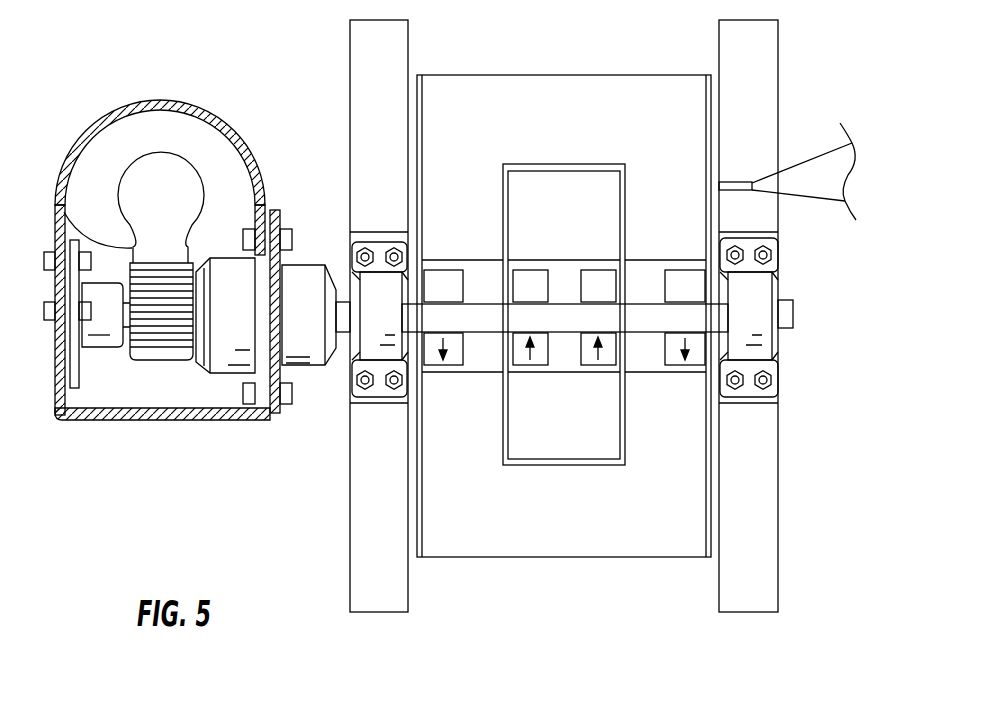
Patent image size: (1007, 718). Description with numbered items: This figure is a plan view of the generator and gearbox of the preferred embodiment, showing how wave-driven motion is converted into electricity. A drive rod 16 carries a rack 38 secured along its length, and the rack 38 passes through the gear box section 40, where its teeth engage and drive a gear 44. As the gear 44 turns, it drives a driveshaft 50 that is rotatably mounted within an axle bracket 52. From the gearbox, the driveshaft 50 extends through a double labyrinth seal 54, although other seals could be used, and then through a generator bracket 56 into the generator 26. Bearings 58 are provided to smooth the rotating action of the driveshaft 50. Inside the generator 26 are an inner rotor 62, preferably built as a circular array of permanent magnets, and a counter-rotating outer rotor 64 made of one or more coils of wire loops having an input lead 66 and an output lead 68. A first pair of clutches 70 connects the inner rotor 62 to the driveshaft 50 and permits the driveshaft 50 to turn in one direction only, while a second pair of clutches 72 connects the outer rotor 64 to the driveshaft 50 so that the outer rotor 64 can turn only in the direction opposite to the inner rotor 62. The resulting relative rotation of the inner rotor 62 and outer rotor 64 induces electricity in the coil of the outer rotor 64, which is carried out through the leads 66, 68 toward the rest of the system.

The drive rod 16 is at (172, 163).
The generator 26 is at (779, 557).
The rack 38 is at (64, 205).
The gear box section 40 is at (172, 420).
The gear 44 is at (135, 362).
The driveshaft 50 is at (345, 295).
The axle bracket 52 is at (56, 398).
The double labyrinth seal 54 is at (287, 362).
The generator bracket 56 is at (370, 613).
The bearings 58 is at (340, 318).
The inner rotor 62 is at (530, 466).
The outer rotor 64 is at (452, 558).
The input lead 66 is at (826, 153).
The output lead 68 is at (817, 202).
The first pair of clutches 70 is at (532, 366).
The second pair of clutches 72 is at (455, 366).